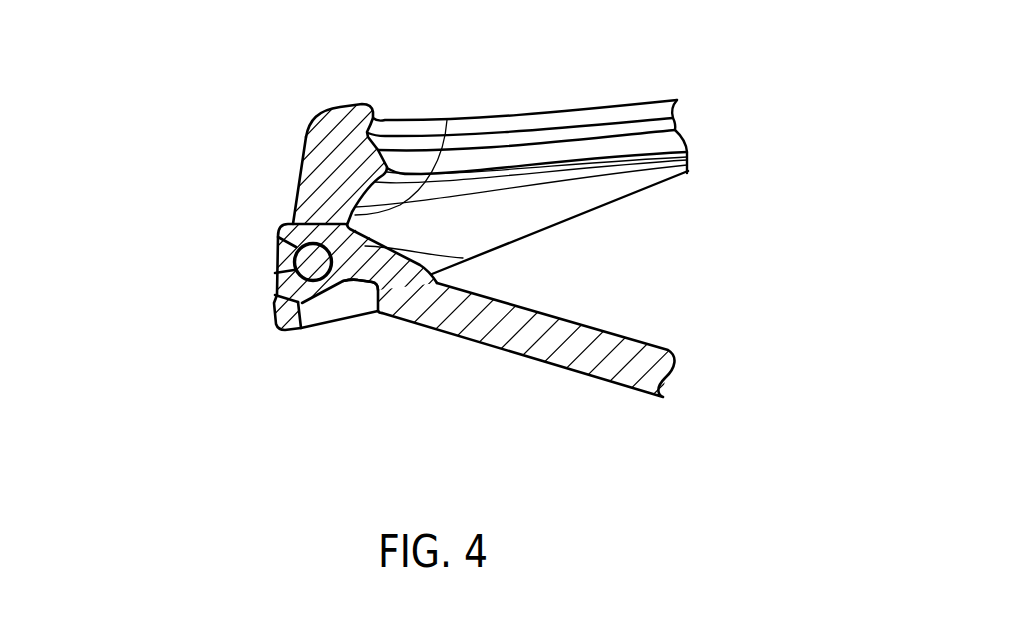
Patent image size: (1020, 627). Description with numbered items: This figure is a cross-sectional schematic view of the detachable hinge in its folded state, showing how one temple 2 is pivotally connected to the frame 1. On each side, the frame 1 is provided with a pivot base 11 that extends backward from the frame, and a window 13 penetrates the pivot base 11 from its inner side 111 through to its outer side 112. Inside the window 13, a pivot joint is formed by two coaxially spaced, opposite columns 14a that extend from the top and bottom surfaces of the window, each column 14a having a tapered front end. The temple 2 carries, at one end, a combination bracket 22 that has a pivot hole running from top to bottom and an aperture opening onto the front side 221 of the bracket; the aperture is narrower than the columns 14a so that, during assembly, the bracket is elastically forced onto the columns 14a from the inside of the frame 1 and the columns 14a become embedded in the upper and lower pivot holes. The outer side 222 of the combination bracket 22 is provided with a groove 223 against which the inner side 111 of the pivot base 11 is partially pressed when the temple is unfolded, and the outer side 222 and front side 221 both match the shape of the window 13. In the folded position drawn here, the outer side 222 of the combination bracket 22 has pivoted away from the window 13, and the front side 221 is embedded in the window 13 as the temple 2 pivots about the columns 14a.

The frame 1 is at (350, 107).
The inner side 111 is at (447, 120).
The outer side 112 is at (300, 175).
The front side 221 is at (282, 227).
The column 14a is at (277, 245).
The window 13 is at (277, 293).
The pivot base 11 is at (290, 309).
The outer side 222 is at (303, 327).
The combination bracket 22 is at (323, 295).
The groove 223 is at (356, 294).
The temple 2 is at (637, 350).